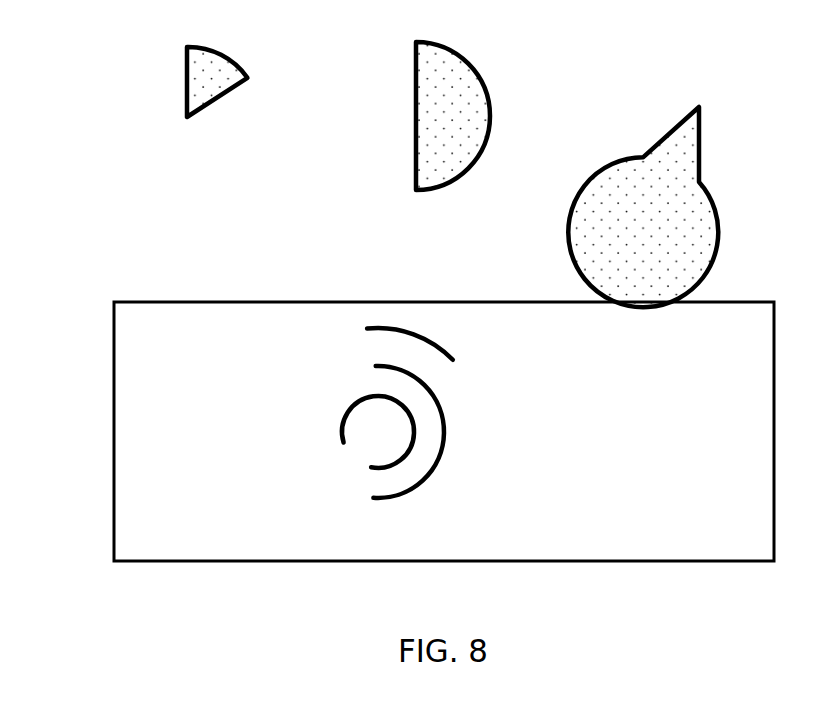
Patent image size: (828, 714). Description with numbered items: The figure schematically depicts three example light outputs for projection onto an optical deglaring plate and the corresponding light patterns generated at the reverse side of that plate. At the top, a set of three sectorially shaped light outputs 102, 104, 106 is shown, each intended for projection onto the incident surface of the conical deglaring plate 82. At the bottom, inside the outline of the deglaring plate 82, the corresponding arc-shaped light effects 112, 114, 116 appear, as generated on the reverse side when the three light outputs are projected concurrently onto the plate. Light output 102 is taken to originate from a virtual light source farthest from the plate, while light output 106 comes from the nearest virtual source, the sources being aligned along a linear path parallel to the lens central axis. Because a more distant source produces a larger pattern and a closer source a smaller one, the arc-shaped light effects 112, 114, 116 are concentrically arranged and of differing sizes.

The conical deglaring plate 82 is at (82, 317).
The light output 102 is at (165, 40).
The light output 104 is at (392, 48).
The light output 106 is at (618, 50).
The arc-shaped light effect 112 is at (417, 333).
The arc-shaped light effect 114 is at (375, 367).
The arc-shaped light effect 116 is at (367, 395).